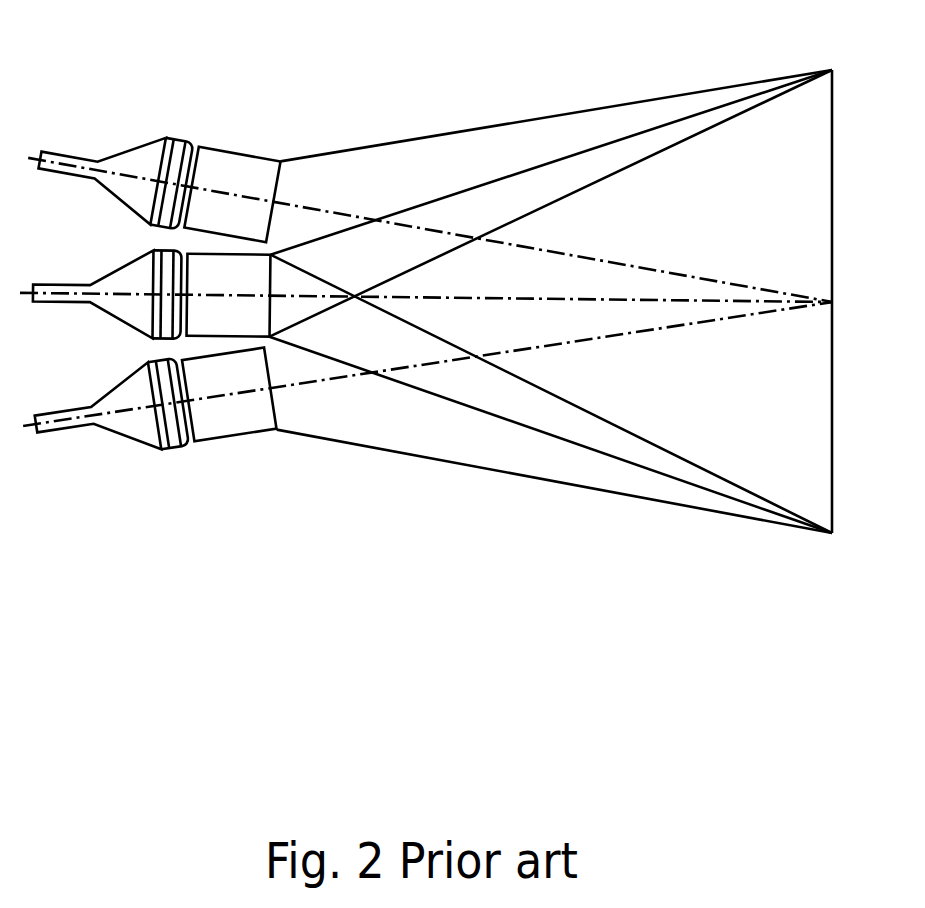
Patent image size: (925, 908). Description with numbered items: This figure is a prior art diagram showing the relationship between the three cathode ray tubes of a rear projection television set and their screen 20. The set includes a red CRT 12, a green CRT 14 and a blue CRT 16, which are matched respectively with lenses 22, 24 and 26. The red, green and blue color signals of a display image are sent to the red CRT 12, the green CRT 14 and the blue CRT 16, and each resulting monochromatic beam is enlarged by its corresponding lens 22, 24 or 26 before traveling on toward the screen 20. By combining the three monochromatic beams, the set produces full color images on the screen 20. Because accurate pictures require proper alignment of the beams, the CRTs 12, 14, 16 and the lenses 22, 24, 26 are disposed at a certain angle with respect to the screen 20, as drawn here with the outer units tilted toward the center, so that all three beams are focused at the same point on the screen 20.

The red CRT 12 is at (123, 440).
The green CRT 14 is at (111, 313).
The blue CRT 16 is at (139, 152).
The screen 20 is at (836, 108).
The lens 22 is at (233, 437).
The lens 24 is at (217, 250).
The lens 26 is at (246, 174).